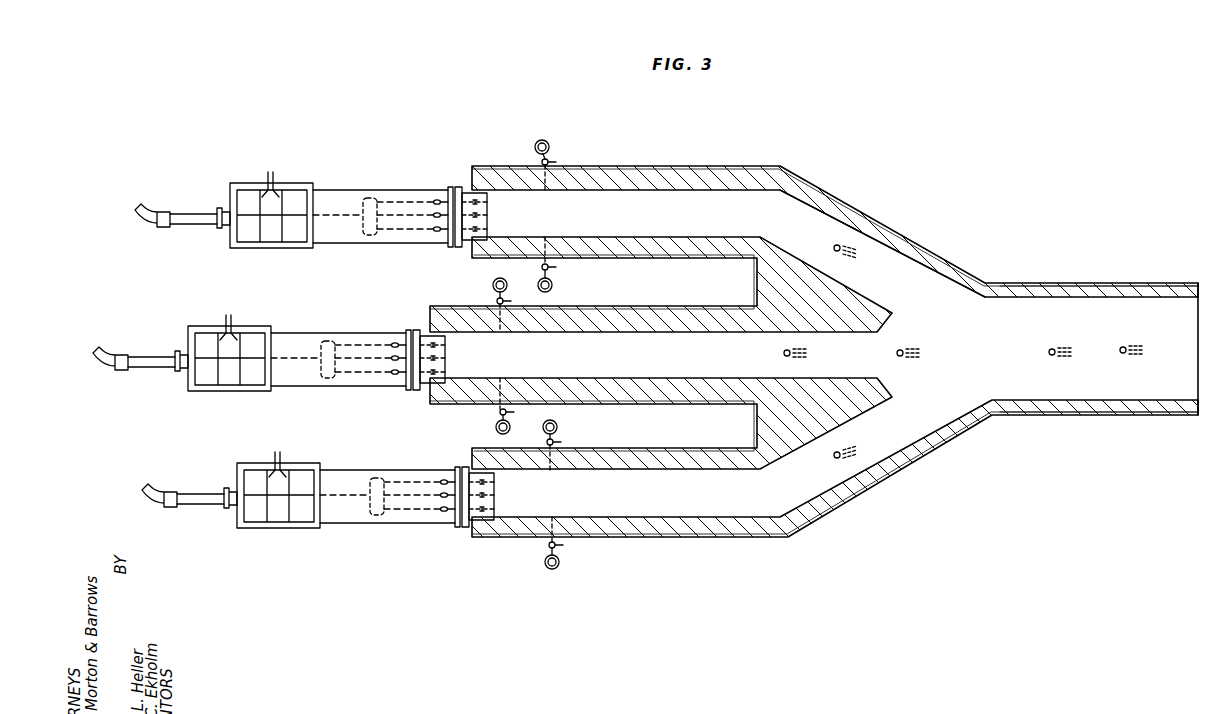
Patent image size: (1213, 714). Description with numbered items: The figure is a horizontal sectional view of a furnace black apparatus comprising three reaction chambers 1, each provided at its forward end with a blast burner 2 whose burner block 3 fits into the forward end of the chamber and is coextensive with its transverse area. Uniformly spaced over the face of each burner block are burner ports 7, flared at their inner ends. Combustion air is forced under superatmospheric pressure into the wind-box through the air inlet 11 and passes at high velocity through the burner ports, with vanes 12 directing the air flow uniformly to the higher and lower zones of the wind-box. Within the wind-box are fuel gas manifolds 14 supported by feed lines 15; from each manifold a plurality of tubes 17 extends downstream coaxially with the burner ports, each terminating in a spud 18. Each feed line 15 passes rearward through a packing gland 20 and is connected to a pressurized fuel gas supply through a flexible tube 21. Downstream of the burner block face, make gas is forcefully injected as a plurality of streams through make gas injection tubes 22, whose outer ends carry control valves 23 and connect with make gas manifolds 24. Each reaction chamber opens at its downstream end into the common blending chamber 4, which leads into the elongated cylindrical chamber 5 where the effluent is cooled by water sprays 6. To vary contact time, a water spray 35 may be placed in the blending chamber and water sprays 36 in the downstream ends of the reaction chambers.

The reaction chamber 1 is at (643, 203).
The blast burner 2 is at (402, 190).
The burner block 3 is at (459, 193).
The blending chamber 4 is at (937, 335).
The elongated cylindrical chamber 5 is at (1087, 305).
The water sprays 6 is at (1121, 353).
The burner ports 7 is at (463, 248).
The air inlet 11 is at (298, 192).
The vanes 12 is at (253, 314).
The fuel gas manifolds 14 is at (365, 205).
The feed lines 15 is at (190, 225).
The tubes 17 is at (392, 222).
The spud 18 is at (433, 232).
The packing gland 20 is at (222, 208).
The flexible tube 21 is at (138, 220).
The make gas injection tubes 22 is at (572, 172).
The control valves 23 is at (556, 160).
The make gas manifolds 24 is at (548, 141).
The water spray 35 is at (903, 357).
The water sprays 36 is at (833, 246).